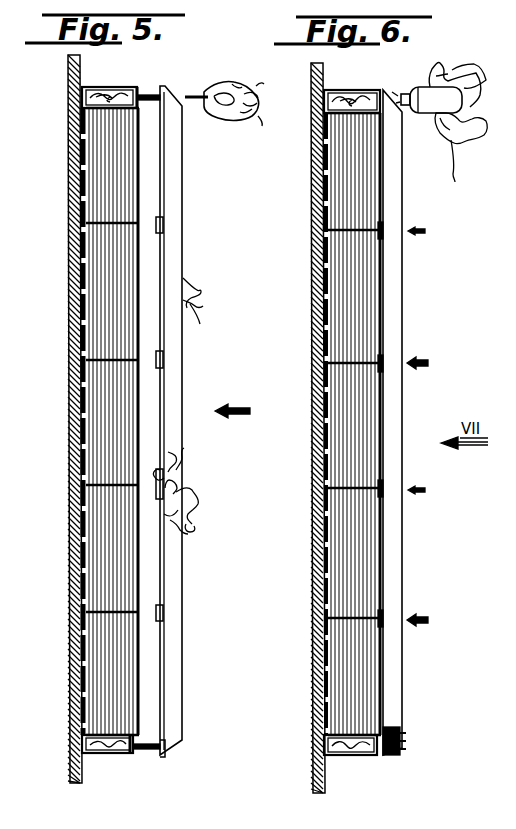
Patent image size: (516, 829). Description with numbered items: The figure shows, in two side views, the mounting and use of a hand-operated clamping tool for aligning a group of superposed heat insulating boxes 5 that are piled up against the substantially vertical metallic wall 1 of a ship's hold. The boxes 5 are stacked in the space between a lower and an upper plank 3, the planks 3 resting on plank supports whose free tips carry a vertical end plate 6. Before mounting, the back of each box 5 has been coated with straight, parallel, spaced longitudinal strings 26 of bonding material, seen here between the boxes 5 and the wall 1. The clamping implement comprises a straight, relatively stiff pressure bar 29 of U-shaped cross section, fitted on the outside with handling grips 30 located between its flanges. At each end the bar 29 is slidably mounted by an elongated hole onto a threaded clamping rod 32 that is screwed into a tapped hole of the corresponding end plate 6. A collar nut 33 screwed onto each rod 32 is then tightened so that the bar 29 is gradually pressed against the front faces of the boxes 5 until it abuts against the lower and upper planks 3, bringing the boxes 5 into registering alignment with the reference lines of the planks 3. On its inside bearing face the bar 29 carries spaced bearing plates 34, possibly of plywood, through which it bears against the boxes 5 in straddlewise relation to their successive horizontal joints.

In FIG. 5, the metallic wall 1 is at (70, 432).
In FIG. 6, the metallic wall 1 is at (318, 228).
In FIG. 5, the plank 3 is at (112, 98).
In FIG. 6, the plank 3 is at (352, 99).
In FIG. 5, the heat insulating box 5 is at (125, 166).
In FIG. 6, the heat insulating box 5 is at (360, 196).
In FIG. 5, the end plate 6 is at (138, 103).
In FIG. 5, the longitudinal strings 26 is at (79, 300).
In FIG. 6, the longitudinal strings 26 is at (322, 440).
In FIG. 5, the pressure bar 29 is at (172, 175).
In FIG. 6, the pressure bar 29 is at (392, 279).
In FIG. 5, the handling grip 30 is at (183, 484).
In FIG. 5, the threaded clamping rod 32 is at (152, 95).
In FIG. 5, the collar nut 33 is at (198, 97).
In FIG. 6, the collar nut 33 is at (396, 752).
In FIG. 5, the bearing plate 34 is at (165, 228).
In FIG. 6, the bearing plate 34 is at (380, 365).